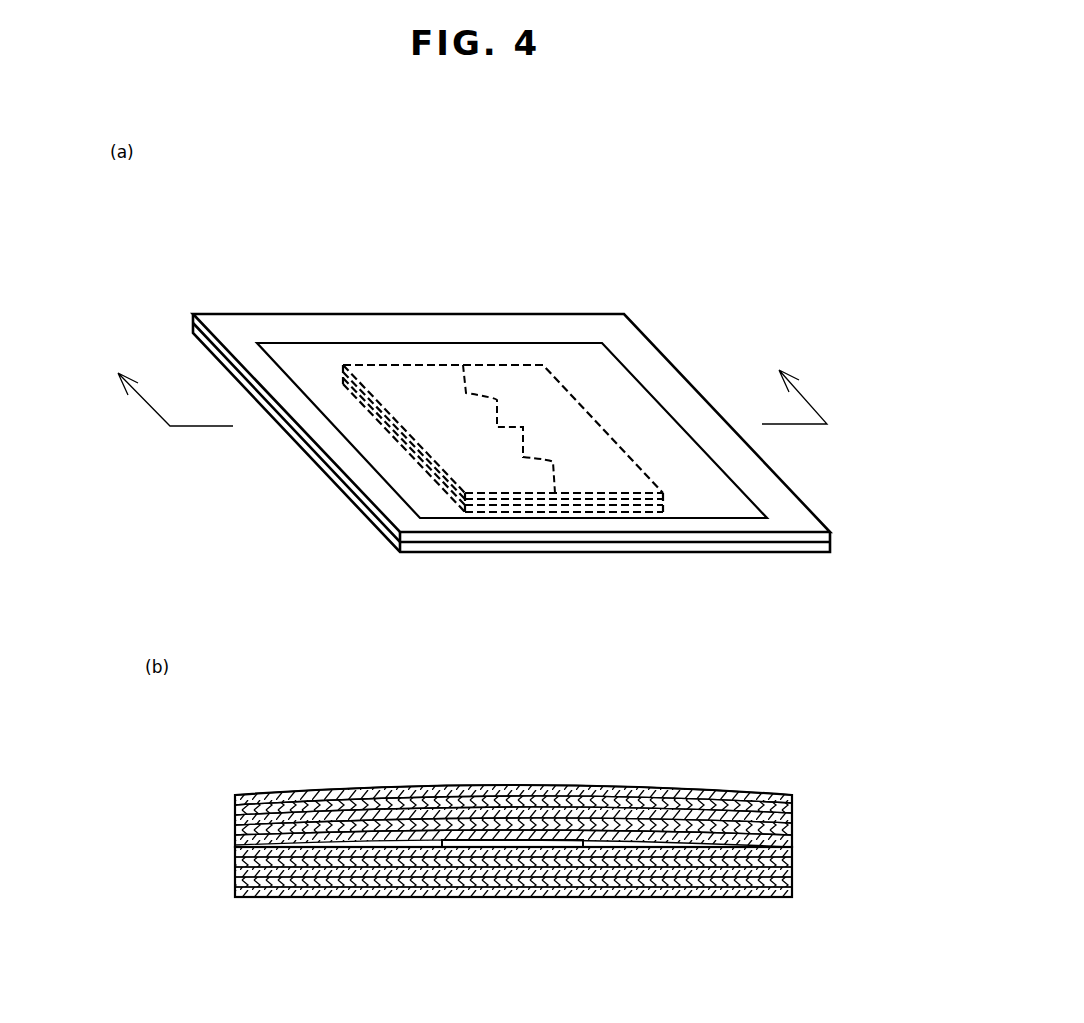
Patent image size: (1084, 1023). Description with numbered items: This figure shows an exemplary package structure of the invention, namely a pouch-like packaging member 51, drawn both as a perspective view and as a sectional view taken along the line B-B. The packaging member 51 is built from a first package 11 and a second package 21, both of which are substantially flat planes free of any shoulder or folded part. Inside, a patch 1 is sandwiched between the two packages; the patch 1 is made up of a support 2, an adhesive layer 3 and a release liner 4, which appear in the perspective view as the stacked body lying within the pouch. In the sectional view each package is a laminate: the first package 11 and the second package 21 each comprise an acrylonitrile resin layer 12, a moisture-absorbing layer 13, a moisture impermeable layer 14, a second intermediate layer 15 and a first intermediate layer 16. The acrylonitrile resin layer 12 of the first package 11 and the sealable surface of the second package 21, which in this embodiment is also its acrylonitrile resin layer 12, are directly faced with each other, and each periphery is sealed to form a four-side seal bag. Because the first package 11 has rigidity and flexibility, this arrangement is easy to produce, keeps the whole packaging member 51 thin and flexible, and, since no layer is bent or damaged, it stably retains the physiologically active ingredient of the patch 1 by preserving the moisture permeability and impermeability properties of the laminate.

The patch 1 is at (537, 539).
The support 2 is at (505, 514).
The adhesive layer 3 is at (583, 505).
The release liner 4 is at (626, 516).
The first package 11 is at (830, 537).
The acrylonitrile resin layer 12 is at (792, 847).
The moisture-absorbing layer 13 is at (792, 826).
The moisture impermeable layer 14 is at (792, 803).
The second intermediate layer 15 is at (792, 836).
The first intermediate layer 16 is at (792, 815).
The second package 21 is at (738, 545).
The pouch-like packaging member 51 is at (501, 554).